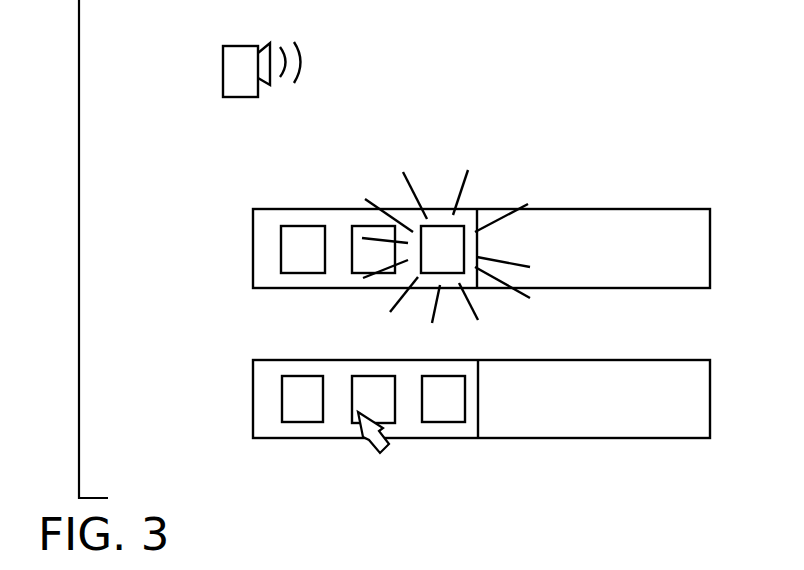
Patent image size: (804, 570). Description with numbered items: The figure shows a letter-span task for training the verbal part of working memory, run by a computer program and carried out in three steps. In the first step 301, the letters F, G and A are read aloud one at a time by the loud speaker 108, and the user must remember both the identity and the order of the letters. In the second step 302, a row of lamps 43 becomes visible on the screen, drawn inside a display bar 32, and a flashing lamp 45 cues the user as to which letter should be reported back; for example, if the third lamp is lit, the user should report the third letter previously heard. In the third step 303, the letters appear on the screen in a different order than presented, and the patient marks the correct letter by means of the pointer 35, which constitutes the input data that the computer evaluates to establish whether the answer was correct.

The loud speaker 108 is at (236, 46).
The letter presentation step 301 is at (281, 54).
The lamp cue step 302 is at (426, 217).
The letter selection step 303 is at (438, 427).
The display bar / keyboard representation 32 is at (299, 209).
The row of lamps 43 is at (297, 277).
The flashing lamp 45 is at (450, 172).
The pointer 35 is at (376, 448).